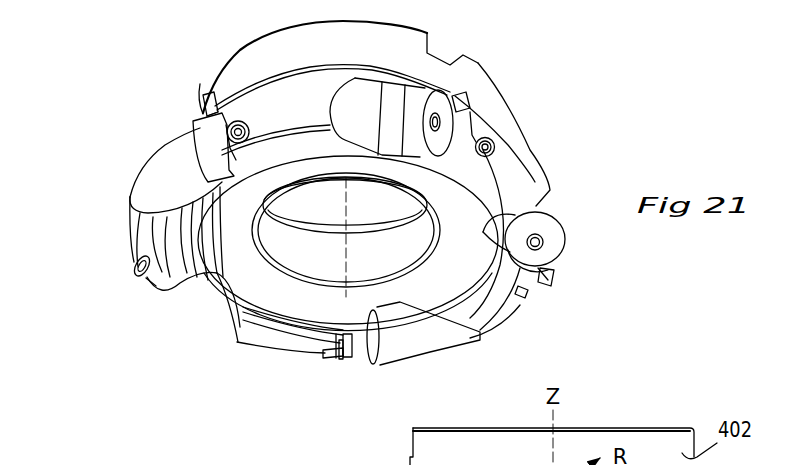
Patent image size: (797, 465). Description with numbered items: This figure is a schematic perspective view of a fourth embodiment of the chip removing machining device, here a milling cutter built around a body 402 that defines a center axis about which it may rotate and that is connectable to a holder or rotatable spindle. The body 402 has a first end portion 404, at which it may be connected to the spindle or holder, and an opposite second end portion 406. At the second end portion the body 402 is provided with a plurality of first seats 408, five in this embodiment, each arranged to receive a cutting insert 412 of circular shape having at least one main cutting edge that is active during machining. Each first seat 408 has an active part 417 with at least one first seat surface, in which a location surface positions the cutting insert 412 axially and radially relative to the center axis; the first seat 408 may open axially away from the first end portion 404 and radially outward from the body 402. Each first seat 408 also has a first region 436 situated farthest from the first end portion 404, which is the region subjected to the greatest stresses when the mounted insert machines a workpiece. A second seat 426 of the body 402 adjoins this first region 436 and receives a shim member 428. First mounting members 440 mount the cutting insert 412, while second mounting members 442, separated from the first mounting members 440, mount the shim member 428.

The body 402 is at (480, 88).
The first end portion 404 is at (201, 86).
The second end portion 406 is at (130, 186).
The first seat 408 is at (213, 102).
The cutting insert 412 is at (201, 143).
The active part 417 is at (289, 283).
The second seat 426 is at (239, 112).
The shim member 428 is at (241, 149).
The first region 436 is at (340, 365).
The first mounting members 440 is at (430, 121).
The second mounting members 442 is at (499, 152).